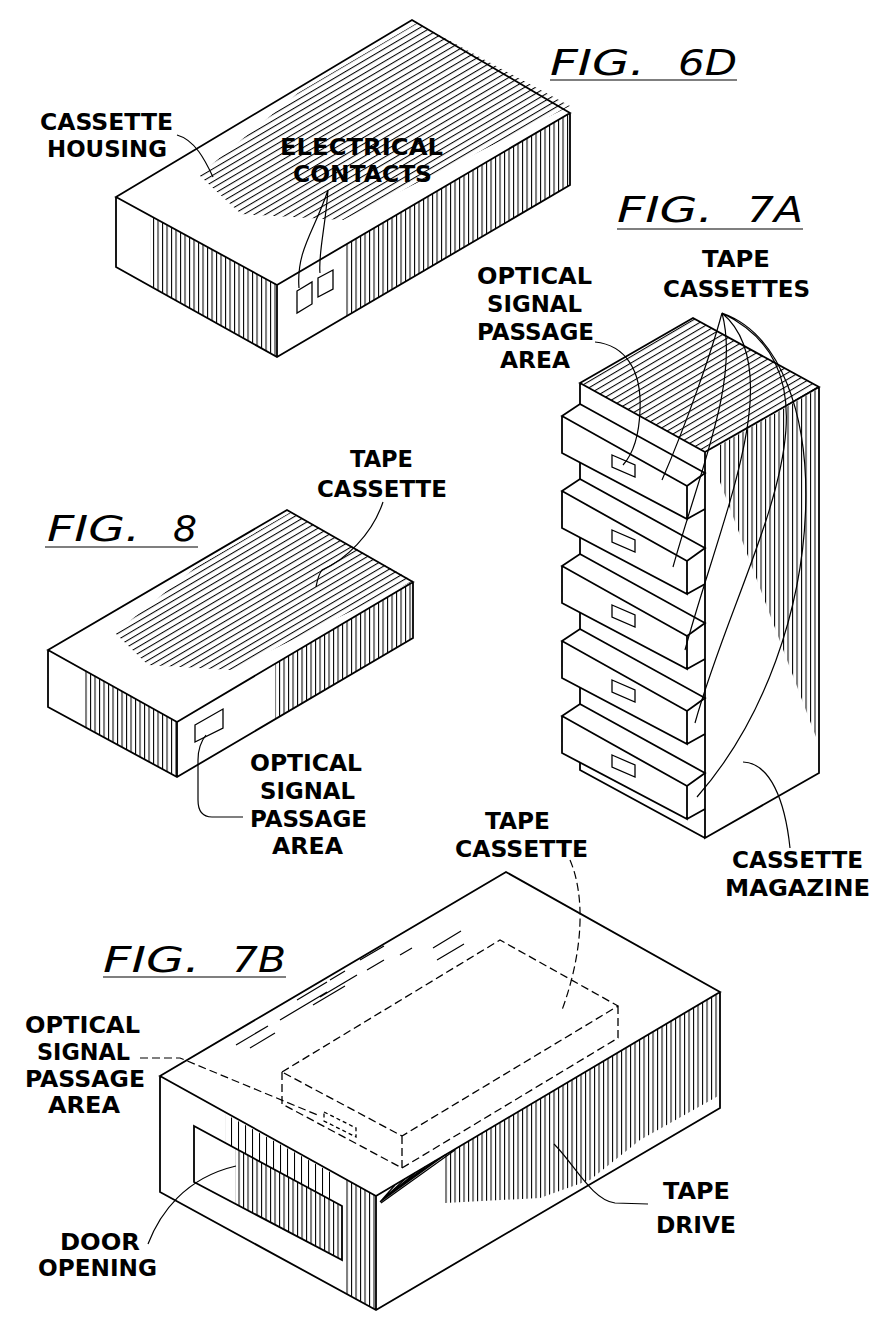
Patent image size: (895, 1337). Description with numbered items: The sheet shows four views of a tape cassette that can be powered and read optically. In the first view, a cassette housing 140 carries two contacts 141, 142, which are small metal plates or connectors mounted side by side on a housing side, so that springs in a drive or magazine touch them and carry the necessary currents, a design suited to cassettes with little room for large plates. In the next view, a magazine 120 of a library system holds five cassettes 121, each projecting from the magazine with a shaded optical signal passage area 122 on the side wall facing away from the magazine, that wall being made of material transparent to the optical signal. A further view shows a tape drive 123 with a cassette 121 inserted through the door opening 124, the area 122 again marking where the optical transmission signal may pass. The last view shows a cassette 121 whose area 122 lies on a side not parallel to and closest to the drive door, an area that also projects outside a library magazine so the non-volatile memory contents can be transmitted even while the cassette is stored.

In FIG. 7A, the magazine 120 is at (795, 718).
In FIG. 7A, the cassette 121 is at (575, 740).
In FIG. 8, the cassette 121 is at (322, 667).
In FIG. 7B, the cassette 121 is at (562, 1010).
In FIG. 7A, the optical signal passage area 122 is at (612, 758).
In FIG. 8, the optical signal passage area 122 is at (218, 718).
In FIG. 7B, the optical signal passage area 122 is at (332, 1106).
In FIG. 7B, the tape drive 123 is at (409, 928).
In FIG. 7B, the door opening 124 is at (294, 1198).
In FIG. 6D, the cassette housing 140 is at (138, 246).
In FIG. 6D, the contact 141 is at (303, 306).
In FIG. 6D, the contact 142 is at (333, 286).